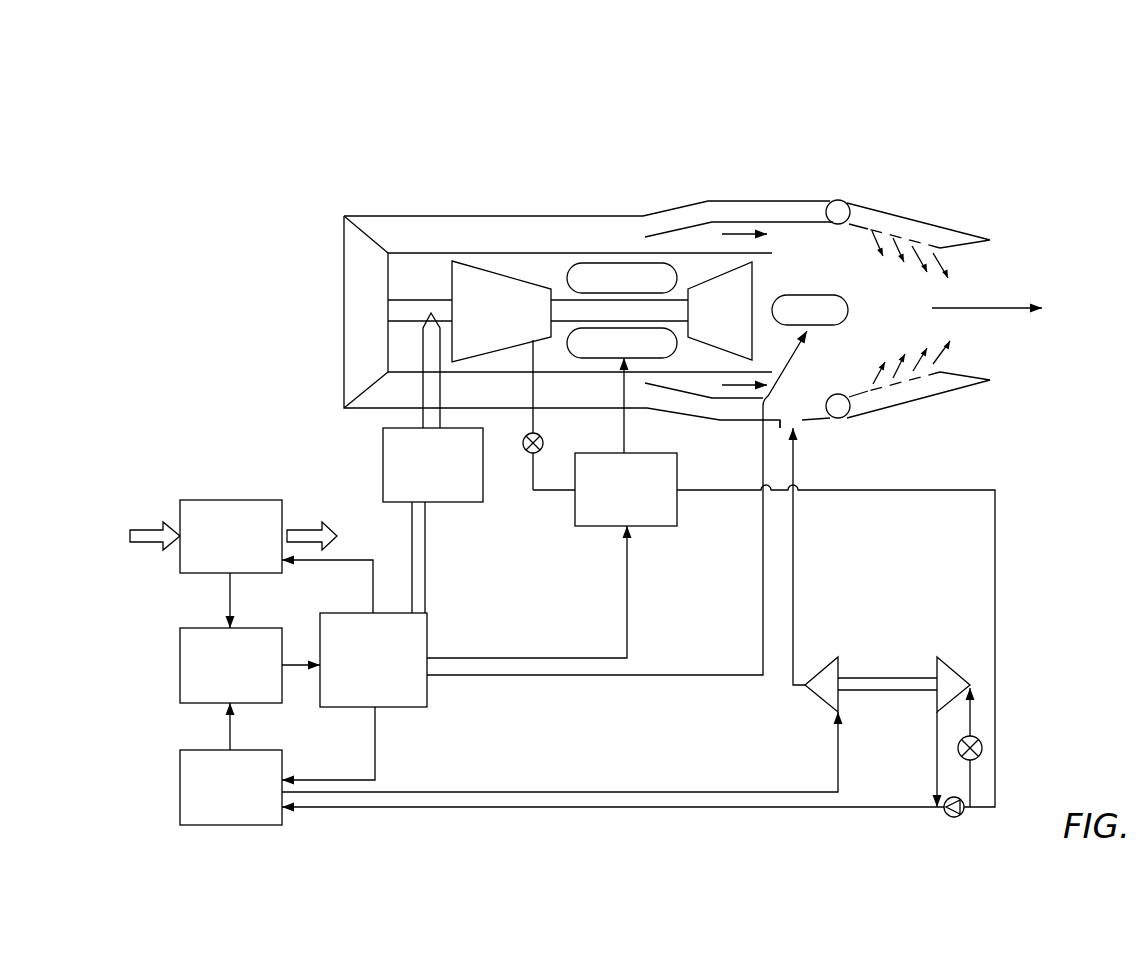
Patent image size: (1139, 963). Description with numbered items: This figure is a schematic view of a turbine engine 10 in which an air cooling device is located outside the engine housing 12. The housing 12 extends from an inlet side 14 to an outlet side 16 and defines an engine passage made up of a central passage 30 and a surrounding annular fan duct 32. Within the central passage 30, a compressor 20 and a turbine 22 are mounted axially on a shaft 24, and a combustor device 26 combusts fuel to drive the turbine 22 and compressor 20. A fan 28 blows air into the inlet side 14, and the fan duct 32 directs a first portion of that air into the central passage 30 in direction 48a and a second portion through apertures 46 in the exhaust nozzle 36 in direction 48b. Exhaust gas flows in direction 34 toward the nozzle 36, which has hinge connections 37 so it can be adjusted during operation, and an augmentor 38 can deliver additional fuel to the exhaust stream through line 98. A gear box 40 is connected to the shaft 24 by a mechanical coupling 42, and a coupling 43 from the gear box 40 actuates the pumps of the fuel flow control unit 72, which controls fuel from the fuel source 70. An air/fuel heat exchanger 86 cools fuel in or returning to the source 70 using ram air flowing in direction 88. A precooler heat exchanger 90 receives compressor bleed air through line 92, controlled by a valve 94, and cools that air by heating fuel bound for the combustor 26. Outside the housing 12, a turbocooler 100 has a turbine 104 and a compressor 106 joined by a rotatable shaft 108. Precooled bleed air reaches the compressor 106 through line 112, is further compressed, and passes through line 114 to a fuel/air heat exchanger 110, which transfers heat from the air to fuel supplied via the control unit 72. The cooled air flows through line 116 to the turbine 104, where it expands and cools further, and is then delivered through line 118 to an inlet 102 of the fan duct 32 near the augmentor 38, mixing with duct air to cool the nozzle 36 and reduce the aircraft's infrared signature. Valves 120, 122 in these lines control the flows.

The turbine engine 10 is at (700, 123).
The housing 12 is at (457, 213).
The inlet side 14 is at (312, 237).
The outlet side 16 is at (1027, 258).
The compressor 20 is at (513, 275).
The turbine 22 is at (723, 272).
The shaft 24 is at (403, 300).
The combustor device 26 is at (617, 263).
The fan 28 is at (363, 310).
The central passage 30 is at (780, 277).
The fan duct 32 is at (582, 238).
The direction of exhaust gas flow 34 is at (1003, 312).
The exhaust nozzle 36 is at (942, 225).
The hinge connections 37 is at (839, 200).
The augmentor 38 is at (843, 297).
The gear box 40 is at (383, 463).
The mechanical coupling 42 is at (423, 414).
The coupling 43 is at (425, 575).
The apertures 46 is at (940, 242).
The direction of first air portion 48a is at (740, 232).
The direction of second air portion 48b is at (897, 240).
The fuel source 70 is at (180, 650).
The fuel flow control unit 72 is at (405, 707).
The air/fuel heat exchanger 86 is at (178, 557).
The direction of ram air flow 88 is at (148, 527).
The precooler heat exchanger 90 is at (657, 453).
The bleed air line 92 is at (541, 500).
The valve 94 is at (527, 452).
The fuel line to augmentor 98 is at (707, 675).
The turbocooler 100 is at (893, 635).
The inlet 102 is at (802, 423).
The turbine 104 is at (827, 660).
The compressor 106 is at (953, 663).
The rotatable shaft 108 is at (898, 692).
The fuel/air heat exchanger 110 is at (207, 825).
The line 112 is at (995, 570).
The line 114 is at (937, 748).
The line 116 is at (660, 792).
The line 118 is at (795, 558).
The valve 120 is at (957, 817).
The valve 122 is at (985, 745).